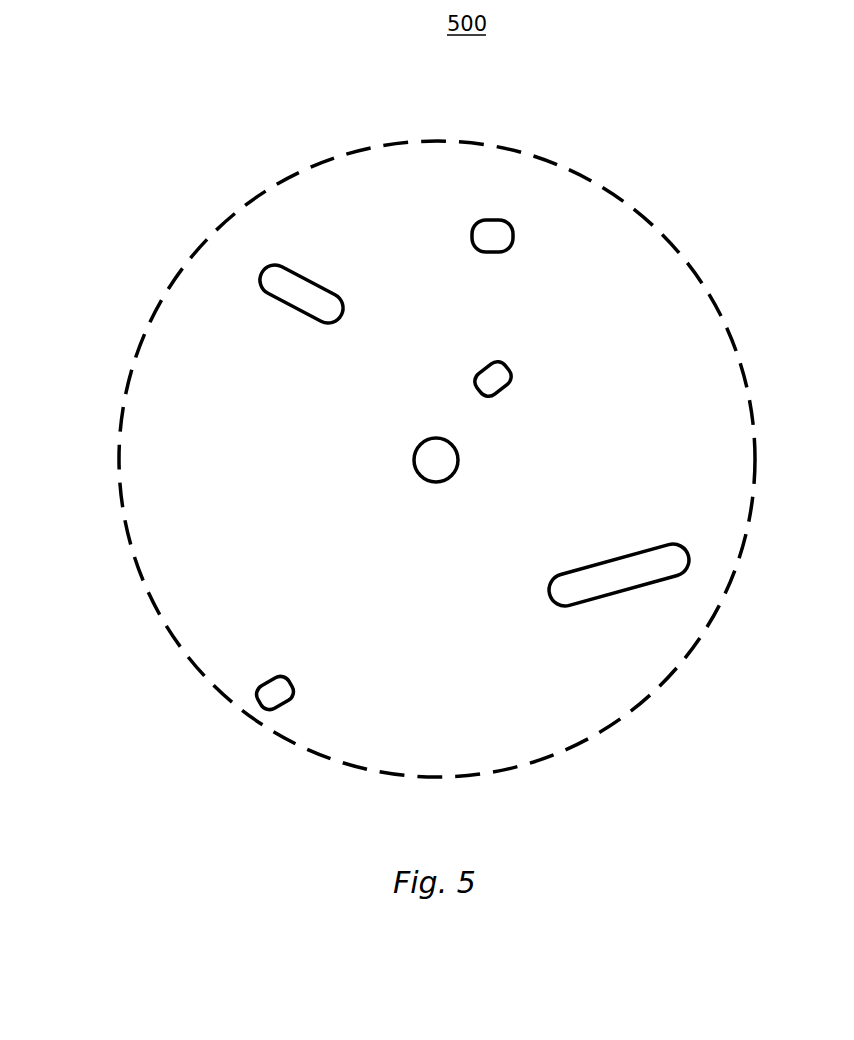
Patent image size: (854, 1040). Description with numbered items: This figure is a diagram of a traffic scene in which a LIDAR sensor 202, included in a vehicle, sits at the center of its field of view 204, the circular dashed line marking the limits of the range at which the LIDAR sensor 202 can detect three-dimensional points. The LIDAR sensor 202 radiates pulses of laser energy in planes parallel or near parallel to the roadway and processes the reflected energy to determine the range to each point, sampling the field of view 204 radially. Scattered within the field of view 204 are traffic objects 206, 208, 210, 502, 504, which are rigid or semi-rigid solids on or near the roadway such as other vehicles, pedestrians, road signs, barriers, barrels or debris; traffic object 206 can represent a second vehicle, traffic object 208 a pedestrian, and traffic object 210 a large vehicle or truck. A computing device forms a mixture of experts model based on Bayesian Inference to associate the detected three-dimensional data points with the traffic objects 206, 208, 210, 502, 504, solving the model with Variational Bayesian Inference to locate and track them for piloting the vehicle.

The field of view 204 is at (118, 460).
The LIDAR sensor 202 is at (413, 460).
The traffic object 206 is at (342, 307).
The traffic object 208 is at (515, 371).
The traffic object 210 is at (550, 596).
The traffic object 502 is at (513, 238).
The traffic object 504 is at (296, 688).